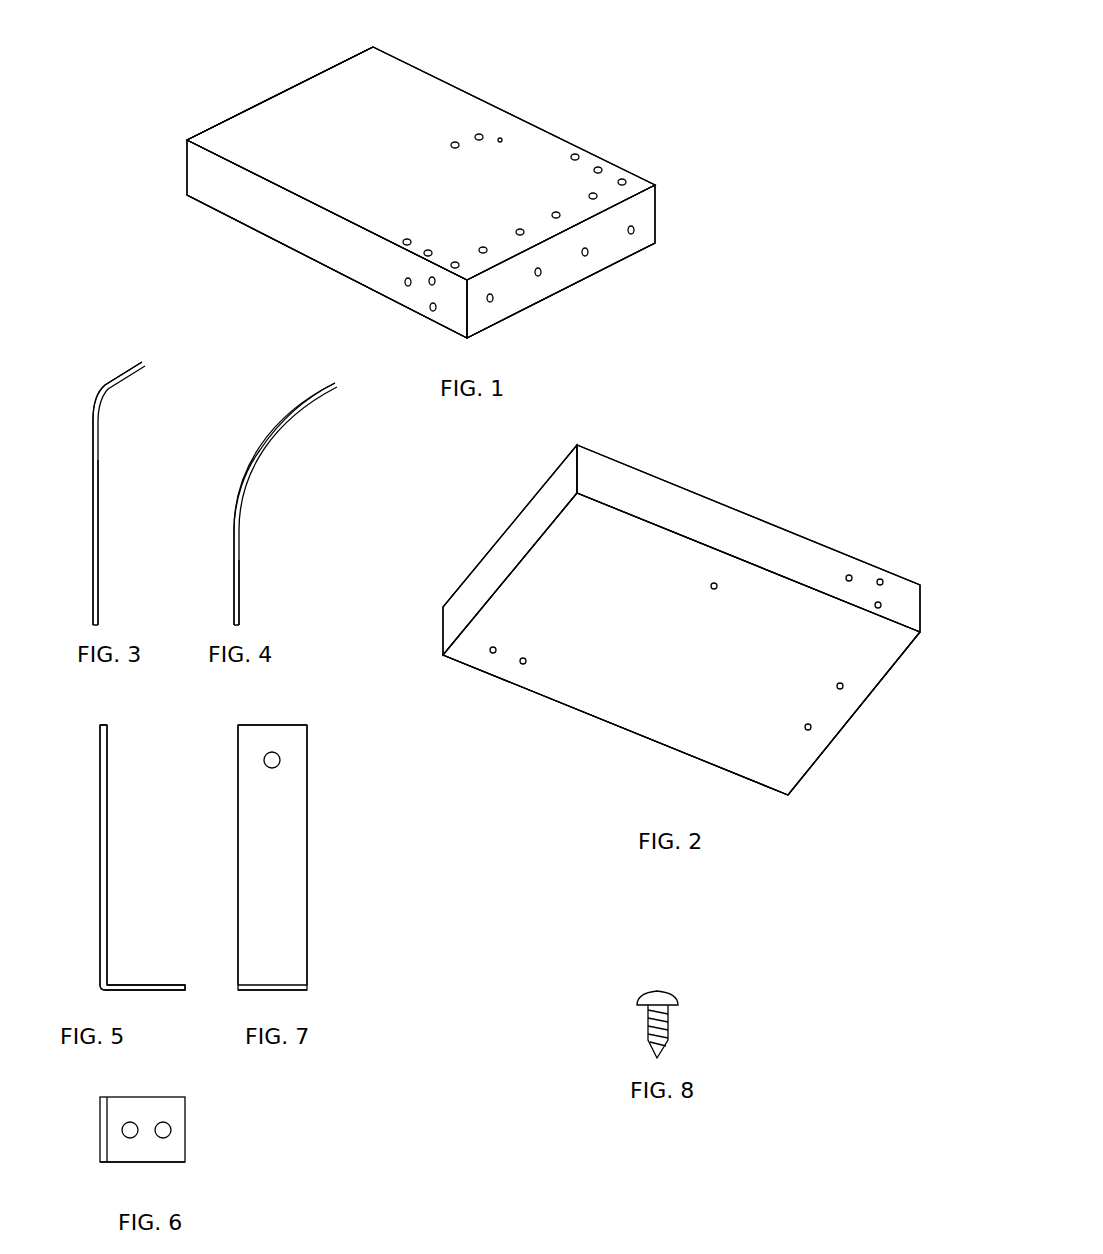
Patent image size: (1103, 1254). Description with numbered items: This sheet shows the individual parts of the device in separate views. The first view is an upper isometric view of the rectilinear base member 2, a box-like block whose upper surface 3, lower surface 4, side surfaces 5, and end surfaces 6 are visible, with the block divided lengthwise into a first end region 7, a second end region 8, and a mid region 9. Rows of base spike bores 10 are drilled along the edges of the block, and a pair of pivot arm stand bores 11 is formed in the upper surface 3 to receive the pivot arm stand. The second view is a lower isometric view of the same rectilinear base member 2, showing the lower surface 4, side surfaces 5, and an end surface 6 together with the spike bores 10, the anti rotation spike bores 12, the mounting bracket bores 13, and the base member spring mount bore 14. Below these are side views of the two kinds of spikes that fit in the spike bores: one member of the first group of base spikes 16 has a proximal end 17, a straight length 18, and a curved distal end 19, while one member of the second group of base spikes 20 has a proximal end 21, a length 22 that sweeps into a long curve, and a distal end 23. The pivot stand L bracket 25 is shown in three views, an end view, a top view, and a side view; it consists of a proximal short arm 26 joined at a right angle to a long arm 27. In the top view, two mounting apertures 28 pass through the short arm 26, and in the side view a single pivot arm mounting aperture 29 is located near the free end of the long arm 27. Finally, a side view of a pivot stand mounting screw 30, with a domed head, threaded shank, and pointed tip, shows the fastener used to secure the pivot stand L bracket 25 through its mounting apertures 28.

In FIG. 1, the rectilinear base member 2 is at (275, 248).
In FIG. 2, the rectilinear base member 2 is at (632, 733).
In FIG. 1, the upper surface 3 is at (397, 80).
In FIG. 1, the lower surface 4 is at (530, 318).
In FIG. 2, the lower surface 4 is at (873, 658).
In FIG. 1, the side surfaces 5 is at (560, 135).
In FIG. 2, the side surfaces 5 is at (672, 504).
In FIG. 1, the end surfaces 6 is at (262, 105).
In FIG. 2, the end surfaces 6 is at (518, 545).
In FIG. 1, the first end region 7 is at (580, 170).
In FIG. 1, the second end region 8 is at (240, 150).
In FIG. 1, the mid region 9 is at (500, 138).
In FIG. 1, the base spike bores 10 is at (625, 180).
In FIG. 2, the base spike bores 10 is at (851, 575).
In FIG. 1, the pivot arm stand bores 11 is at (455, 140).
In FIG. 2, the anti rotation spike bores 12 is at (810, 730).
In FIG. 2, the mounting bracket bores 13 is at (492, 654).
In FIG. 2, the base member spring mount bore 14 is at (716, 583).
In FIG. 3, the first group base spikes 16 is at (93, 500).
In FIG. 3, the proximal end 17 is at (100, 604).
In FIG. 3, the length 18 is at (102, 518).
In FIG. 3, the distal end 19 is at (118, 380).
In FIG. 4, the second group of base spikes 20 is at (232, 531).
In FIG. 4, the proximal end 21 is at (240, 601).
In FIG. 4, the length 22 is at (245, 507).
In FIG. 4, the distal end 23 is at (320, 400).
In FIG. 5, the pivot stand L bracket 25 is at (100, 912).
In FIG. 7, the pivot stand L bracket 25 is at (308, 900).
In FIG. 5, the proximal short arm 26 is at (158, 980).
In FIG. 7, the proximal short arm 26 is at (310, 990).
In FIG. 6, the proximal short arm 26 is at (130, 1163).
In FIG. 5, the long arm 27 is at (108, 800).
In FIG. 7, the long arm 27 is at (308, 858).
In FIG. 6, the long arm 27 is at (100, 1130).
In FIG. 6, the mounting apertures 28 is at (137, 1122).
In FIG. 7, the pivot arm mounting aperture 29 is at (285, 756).
In FIG. 8, the pivot stand mounting screw 30 is at (680, 995).